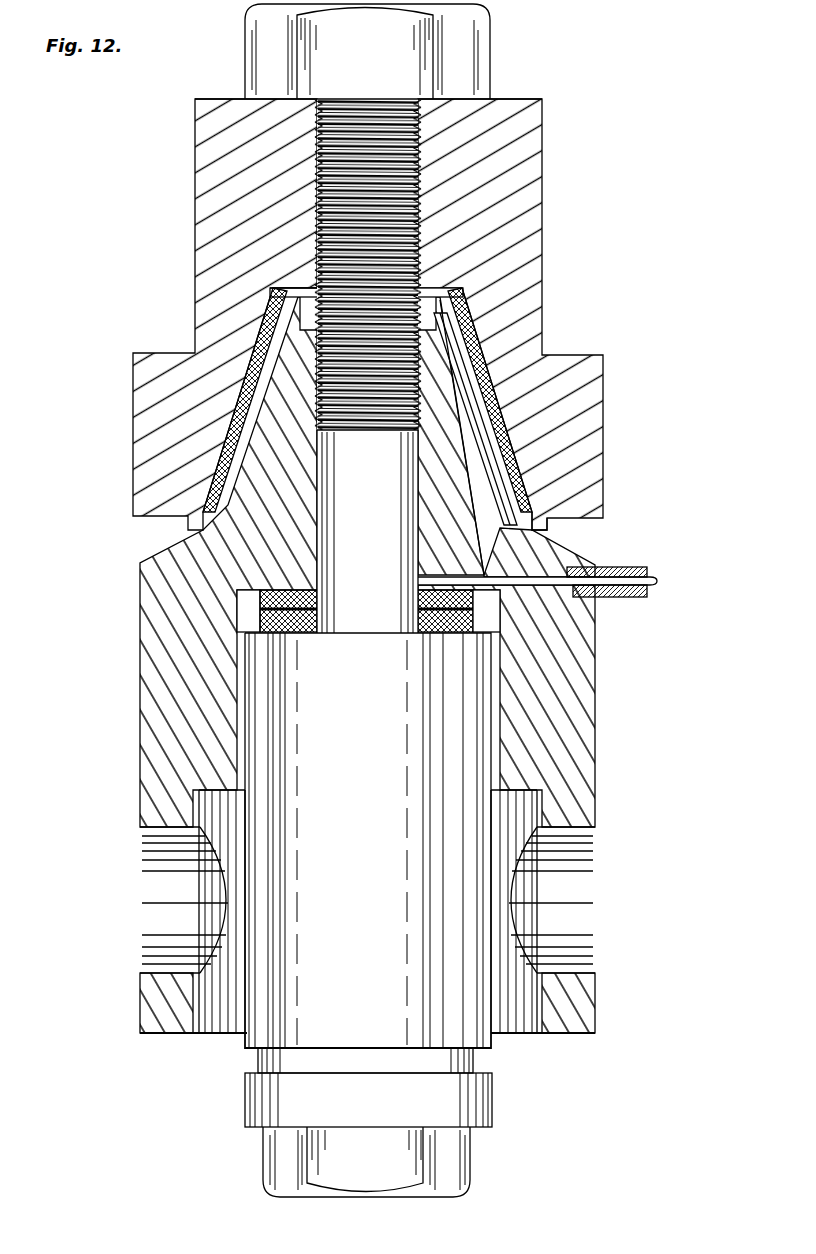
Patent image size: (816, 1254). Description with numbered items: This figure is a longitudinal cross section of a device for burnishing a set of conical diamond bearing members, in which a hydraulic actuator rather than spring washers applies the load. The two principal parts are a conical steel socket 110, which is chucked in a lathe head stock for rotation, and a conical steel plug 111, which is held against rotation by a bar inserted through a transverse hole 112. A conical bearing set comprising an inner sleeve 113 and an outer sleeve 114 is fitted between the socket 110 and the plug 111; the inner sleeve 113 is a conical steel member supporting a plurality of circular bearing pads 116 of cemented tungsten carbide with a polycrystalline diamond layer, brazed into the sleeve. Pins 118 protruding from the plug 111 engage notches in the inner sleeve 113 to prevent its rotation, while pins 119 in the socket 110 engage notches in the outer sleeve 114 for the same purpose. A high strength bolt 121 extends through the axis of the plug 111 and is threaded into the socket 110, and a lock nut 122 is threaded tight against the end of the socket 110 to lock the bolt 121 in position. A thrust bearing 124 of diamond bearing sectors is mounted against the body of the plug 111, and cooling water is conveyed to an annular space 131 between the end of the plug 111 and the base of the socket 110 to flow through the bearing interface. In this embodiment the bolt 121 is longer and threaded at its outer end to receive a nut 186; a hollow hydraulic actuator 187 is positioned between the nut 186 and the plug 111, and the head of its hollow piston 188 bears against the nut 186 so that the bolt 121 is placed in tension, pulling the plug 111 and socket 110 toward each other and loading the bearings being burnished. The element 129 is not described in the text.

The socket 110 is at (542, 162).
The plug 111 is at (595, 774).
The transverse hole 112 is at (190, 887).
The inner sleeve 113 is at (477, 353).
The outer sleeve 114 is at (513, 417).
The bearing pads 116 is at (268, 335).
The pins 118 is at (535, 522).
The pins 119 is at (470, 300).
The bolt 121 is at (402, 634).
The lock nut 122 is at (490, 50).
The thrust bearing 124 is at (238, 625).
The tab washer 129 is at (560, 580).
The annular space 131 is at (290, 283).
The nut 186 is at (452, 1158).
The hollow hydraulic actuator 187 is at (470, 878).
The hollow piston 188 is at (263, 1098).